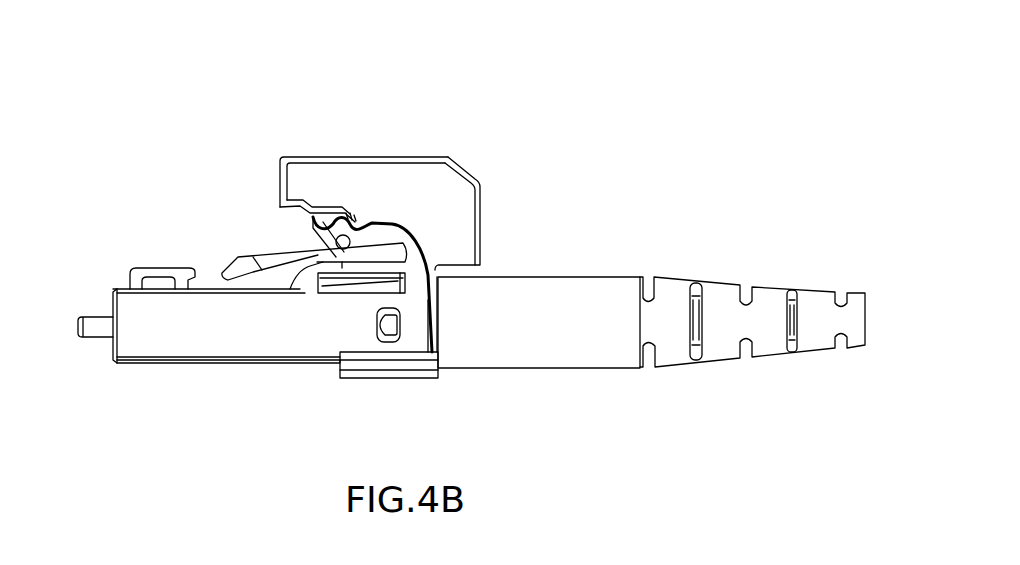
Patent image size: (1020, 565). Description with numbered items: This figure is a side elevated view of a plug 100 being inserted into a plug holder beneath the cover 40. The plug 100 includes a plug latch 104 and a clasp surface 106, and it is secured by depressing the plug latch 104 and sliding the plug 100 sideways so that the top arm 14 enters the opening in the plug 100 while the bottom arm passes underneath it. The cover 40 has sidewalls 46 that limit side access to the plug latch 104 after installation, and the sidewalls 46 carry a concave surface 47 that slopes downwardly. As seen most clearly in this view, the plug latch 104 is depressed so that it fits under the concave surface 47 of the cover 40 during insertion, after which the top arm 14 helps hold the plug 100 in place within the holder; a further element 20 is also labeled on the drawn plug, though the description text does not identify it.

The cover 40 is at (367, 132).
The sidewalls 46 is at (457, 210).
The concave surface 47 is at (400, 224).
The plug 100 is at (673, 235).
The plug latch 104 is at (270, 250).
The clasp surface 106 is at (243, 257).
The top arm 14 is at (378, 286).
The bottom tab 20 is at (392, 363).